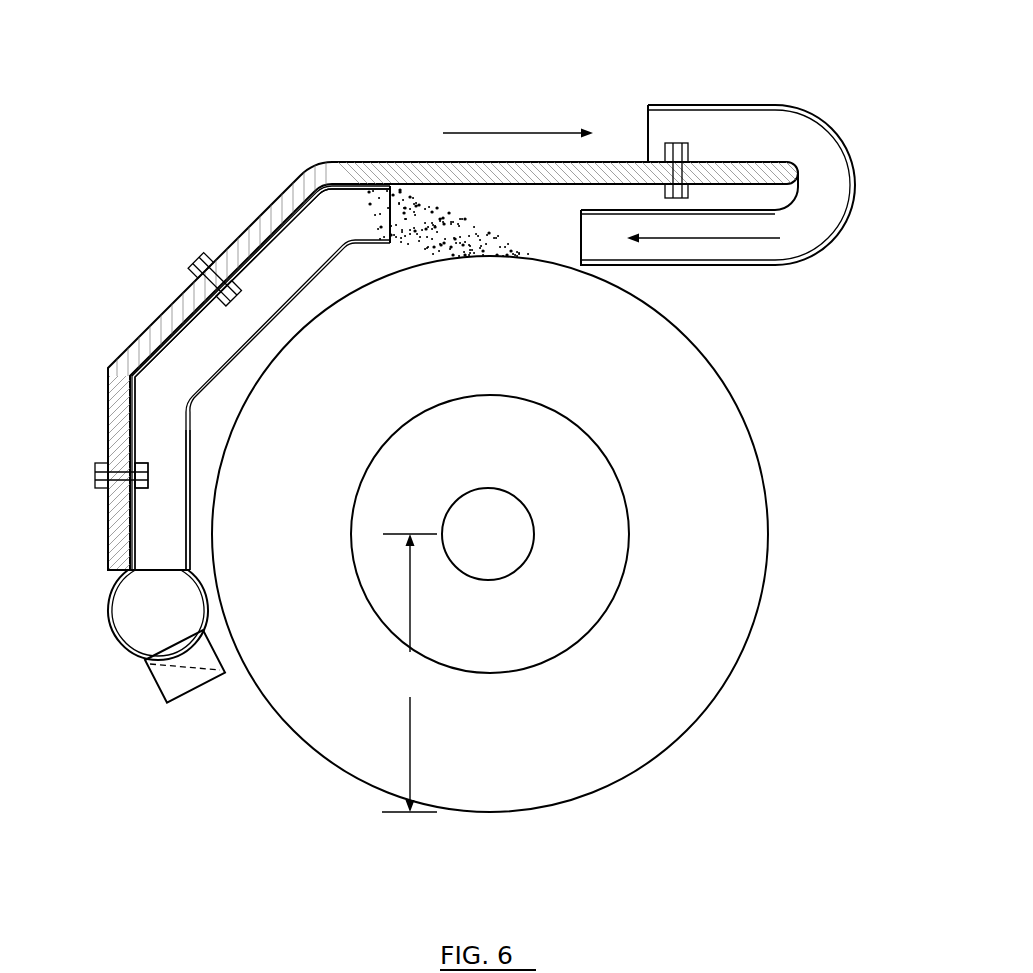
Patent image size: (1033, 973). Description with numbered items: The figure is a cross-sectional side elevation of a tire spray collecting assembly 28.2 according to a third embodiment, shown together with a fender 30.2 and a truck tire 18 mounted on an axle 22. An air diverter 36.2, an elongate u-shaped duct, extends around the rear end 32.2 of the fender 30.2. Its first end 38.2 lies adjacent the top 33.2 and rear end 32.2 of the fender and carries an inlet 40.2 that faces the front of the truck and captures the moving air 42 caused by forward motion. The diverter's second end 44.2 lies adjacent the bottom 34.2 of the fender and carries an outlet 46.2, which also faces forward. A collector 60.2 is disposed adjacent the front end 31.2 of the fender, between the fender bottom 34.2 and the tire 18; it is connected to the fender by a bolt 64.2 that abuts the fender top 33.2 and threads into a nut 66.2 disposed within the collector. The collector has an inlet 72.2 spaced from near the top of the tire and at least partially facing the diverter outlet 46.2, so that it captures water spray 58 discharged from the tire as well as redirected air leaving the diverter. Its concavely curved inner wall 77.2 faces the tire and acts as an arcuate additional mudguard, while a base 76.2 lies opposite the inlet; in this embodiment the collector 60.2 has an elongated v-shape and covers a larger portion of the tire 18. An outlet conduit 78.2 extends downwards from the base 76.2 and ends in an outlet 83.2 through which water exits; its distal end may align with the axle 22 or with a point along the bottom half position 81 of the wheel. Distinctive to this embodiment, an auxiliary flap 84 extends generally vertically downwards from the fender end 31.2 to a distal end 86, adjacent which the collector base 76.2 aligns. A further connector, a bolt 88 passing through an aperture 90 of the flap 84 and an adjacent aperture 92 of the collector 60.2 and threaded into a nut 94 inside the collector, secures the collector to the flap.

The tire 18 is at (500, 385).
The axle 22 is at (488, 534).
The tire spray collecting assembly 28.2 is at (738, 186).
The fender 30.2 is at (405, 162).
The front end of the fender 31.2 is at (107, 368).
The rear end of the fender 32.2 is at (773, 132).
The top of the fender 33.2 is at (265, 211).
The bottom of the fender 34.2 is at (467, 184).
The air diverter 36.2 is at (787, 102).
The first end of the diverter 38.2 is at (648, 105).
The inlet of the diverter 40.2 is at (647, 115).
The moving air 42 is at (480, 132).
The second end of the diverter 44.2 is at (581, 267).
The outlet of the diverter 46.2 is at (572, 247).
The water spray 58 is at (715, 240).
The collector 60.2 is at (238, 368).
The bolt 64.2 is at (192, 262).
The nut 66.2 is at (243, 317).
The inlet of the collector 72.2 is at (392, 228).
The base of the collector 76.2 is at (190, 572).
The inner wall of the collector 77.2 is at (237, 303).
The outlet conduit 78.2 is at (123, 652).
The bottom half position of the wheel 81 is at (409, 673).
The outlet 83.2 is at (227, 680).
The auxiliary flap 84 is at (107, 425).
The distal end of the flap 86 is at (120, 573).
The bolt 88 is at (95, 470).
The aperture of the flap 90 is at (98, 488).
The aperture of the collector 92 is at (135, 488).
The nut 94 is at (148, 468).